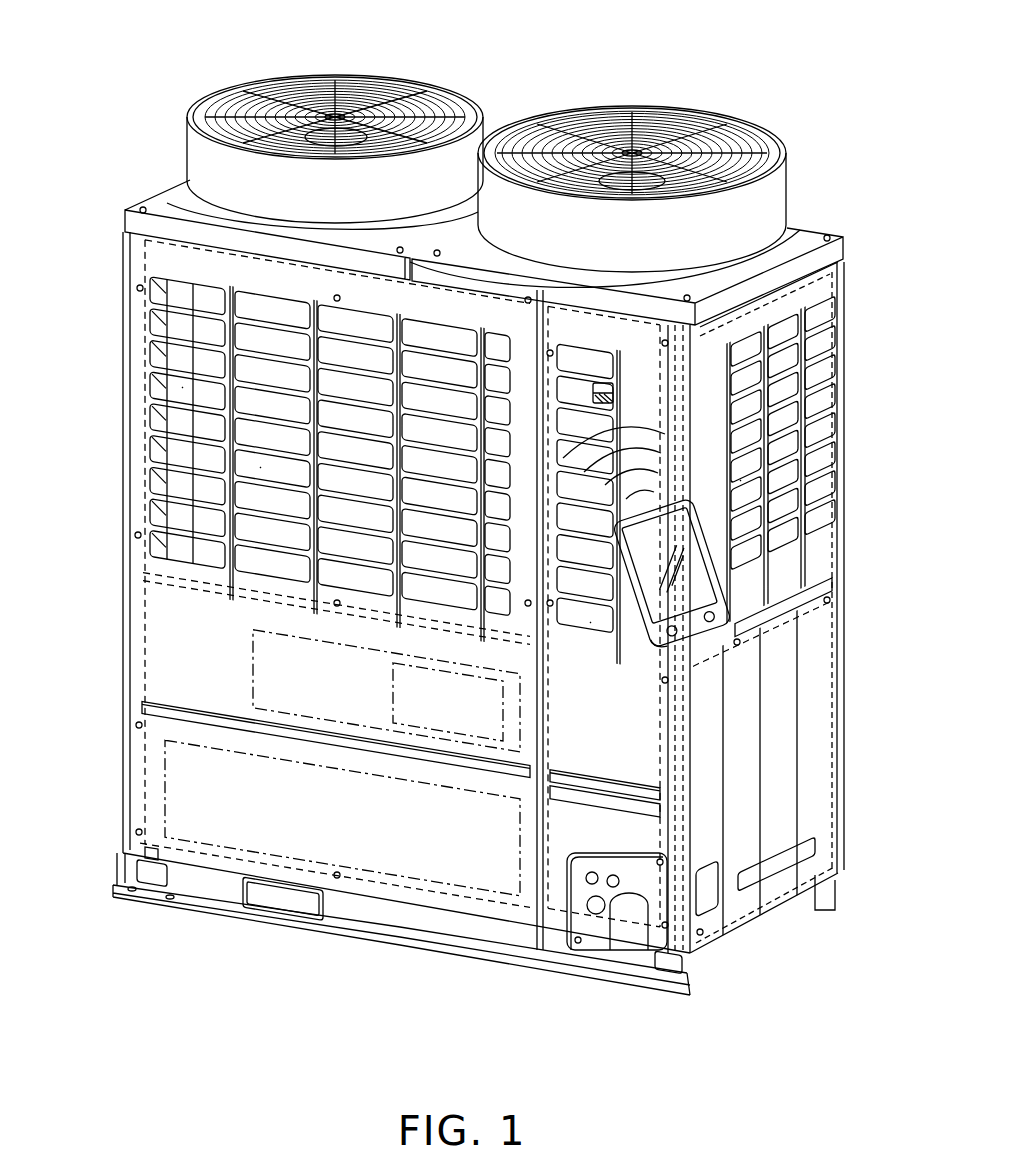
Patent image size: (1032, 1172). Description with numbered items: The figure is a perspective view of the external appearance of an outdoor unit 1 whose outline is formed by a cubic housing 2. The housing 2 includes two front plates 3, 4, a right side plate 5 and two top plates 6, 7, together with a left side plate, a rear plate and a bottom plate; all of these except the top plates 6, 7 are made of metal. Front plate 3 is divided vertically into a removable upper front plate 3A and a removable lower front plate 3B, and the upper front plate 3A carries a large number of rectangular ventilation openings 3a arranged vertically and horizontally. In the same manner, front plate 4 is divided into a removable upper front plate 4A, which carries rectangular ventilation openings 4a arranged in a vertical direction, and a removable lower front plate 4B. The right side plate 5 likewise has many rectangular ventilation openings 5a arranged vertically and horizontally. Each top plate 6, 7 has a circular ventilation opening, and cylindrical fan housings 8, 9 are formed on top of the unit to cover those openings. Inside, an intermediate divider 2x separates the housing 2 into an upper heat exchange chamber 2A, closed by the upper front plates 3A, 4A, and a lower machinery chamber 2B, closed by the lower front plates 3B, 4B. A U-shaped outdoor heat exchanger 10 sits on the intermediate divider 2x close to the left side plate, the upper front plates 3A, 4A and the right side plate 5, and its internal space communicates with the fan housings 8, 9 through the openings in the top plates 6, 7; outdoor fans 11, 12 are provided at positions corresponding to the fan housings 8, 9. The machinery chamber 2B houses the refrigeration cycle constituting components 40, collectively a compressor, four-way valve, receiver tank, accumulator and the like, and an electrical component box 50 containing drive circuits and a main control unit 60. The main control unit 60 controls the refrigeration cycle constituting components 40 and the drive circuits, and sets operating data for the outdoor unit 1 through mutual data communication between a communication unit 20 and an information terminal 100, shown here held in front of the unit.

The outdoor unit 1 is at (832, 112).
The housing 2 is at (122, 222).
The heat exchange chamber 2A is at (336, 605).
The machinery chamber 2B is at (140, 763).
The intermediate divider 2x is at (336, 613).
The front plate 3 is at (137, 321).
The ventilation openings 3a is at (330, 446).
The upper front plate 3A is at (330, 459).
The lower front plate 3B is at (336, 739).
The front plate 4 is at (543, 340).
The ventilation openings 4a is at (585, 488).
The upper front plate 4A is at (588, 502).
The lower front plate 4B is at (645, 837).
The right side plate 5 is at (820, 735).
The ventilation openings 5a is at (823, 297).
The top plate 6 is at (160, 207).
The top plate 7 is at (808, 238).
The fan housing 8 is at (385, 78).
The fan housing 9 is at (673, 110).
The outdoor heat exchanger 10 is at (182, 387).
The outdoor fan 11 is at (463, 100).
The outdoor fan 12 is at (754, 150).
The communication unit 20 is at (603, 395).
The refrigeration cycle constituting components 40 is at (342, 818).
The electrical component box 50 is at (386, 691).
The main control unit 60 is at (448, 702).
The information terminal 100 is at (683, 585).